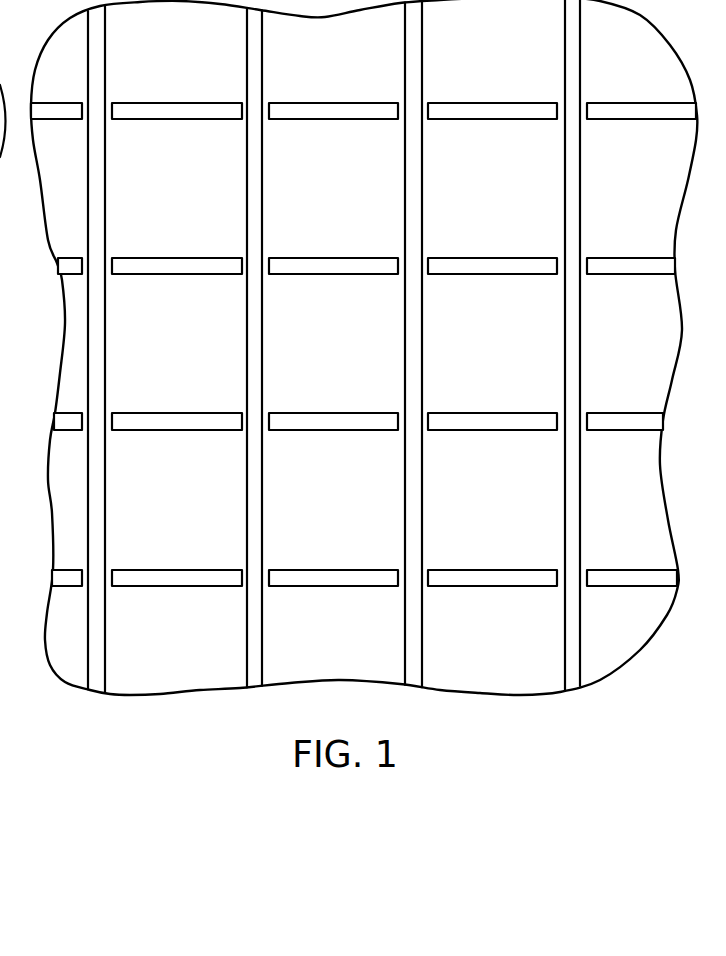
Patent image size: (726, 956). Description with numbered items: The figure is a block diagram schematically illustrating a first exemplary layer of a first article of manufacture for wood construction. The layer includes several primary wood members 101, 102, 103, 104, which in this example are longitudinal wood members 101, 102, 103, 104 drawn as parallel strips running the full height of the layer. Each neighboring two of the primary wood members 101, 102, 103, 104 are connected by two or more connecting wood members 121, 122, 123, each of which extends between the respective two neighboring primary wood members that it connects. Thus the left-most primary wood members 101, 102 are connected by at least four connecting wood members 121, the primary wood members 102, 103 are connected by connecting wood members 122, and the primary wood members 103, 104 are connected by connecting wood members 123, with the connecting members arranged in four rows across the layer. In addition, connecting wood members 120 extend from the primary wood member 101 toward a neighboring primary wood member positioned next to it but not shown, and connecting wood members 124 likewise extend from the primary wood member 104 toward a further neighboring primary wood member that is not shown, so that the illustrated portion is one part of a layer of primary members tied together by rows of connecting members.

The primary wood member 101 is at (105, 158).
The primary wood member 102 is at (262, 158).
The primary wood member 103 is at (422, 158).
The primary wood member 104 is at (580, 158).
The connecting wood member 120 is at (68, 120).
The connecting wood member 121 is at (191, 103).
The connecting wood member 122 is at (324, 103).
The connecting wood member 123 is at (485, 103).
The connecting wood member 124 is at (617, 103).